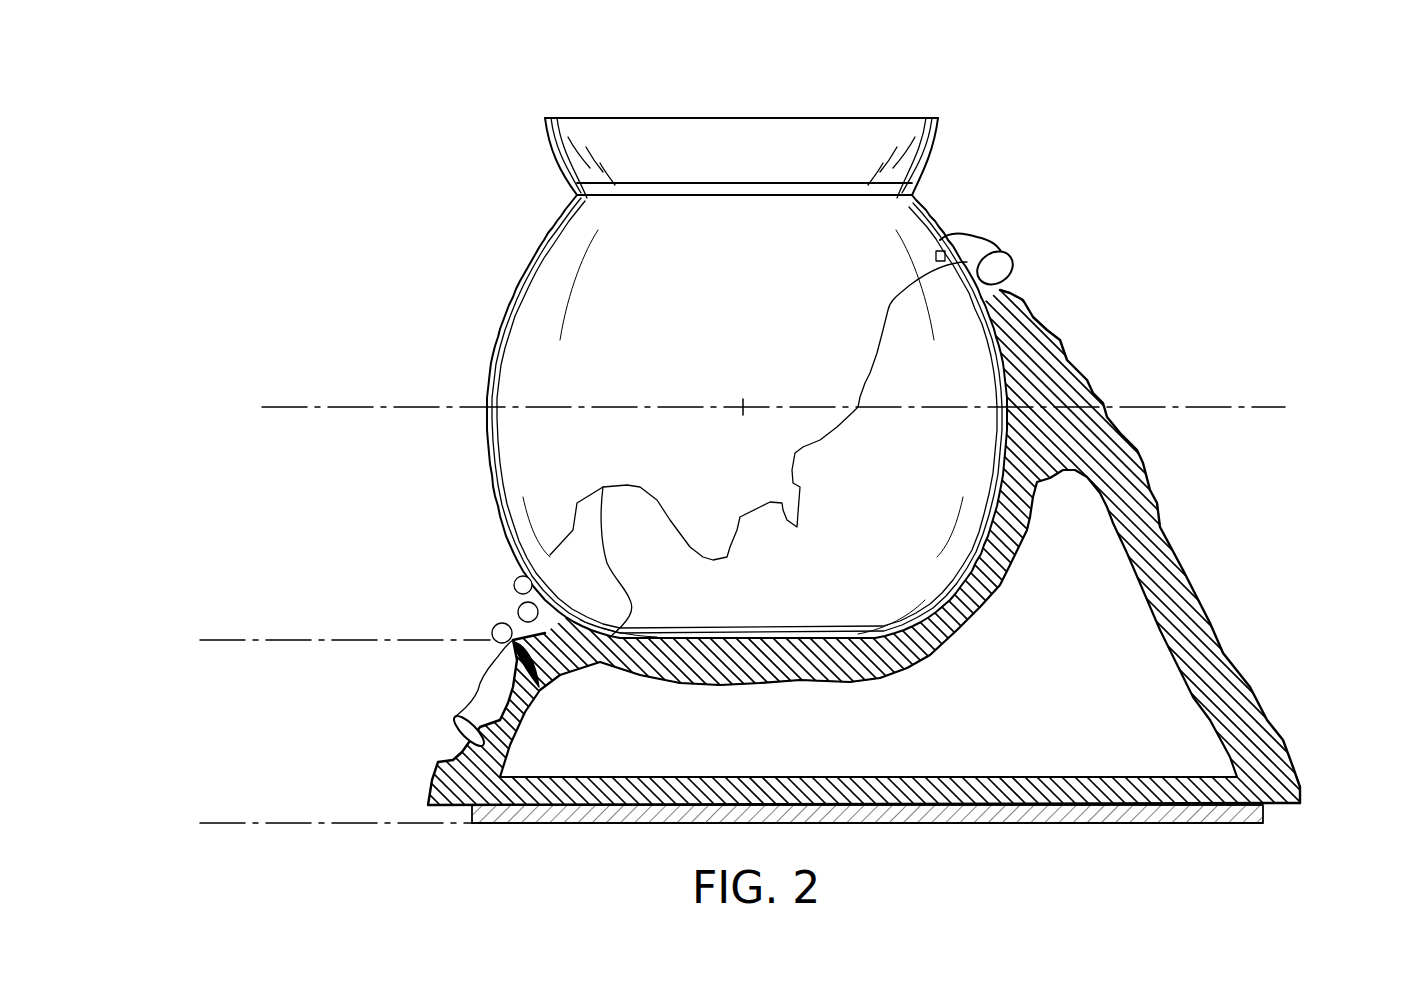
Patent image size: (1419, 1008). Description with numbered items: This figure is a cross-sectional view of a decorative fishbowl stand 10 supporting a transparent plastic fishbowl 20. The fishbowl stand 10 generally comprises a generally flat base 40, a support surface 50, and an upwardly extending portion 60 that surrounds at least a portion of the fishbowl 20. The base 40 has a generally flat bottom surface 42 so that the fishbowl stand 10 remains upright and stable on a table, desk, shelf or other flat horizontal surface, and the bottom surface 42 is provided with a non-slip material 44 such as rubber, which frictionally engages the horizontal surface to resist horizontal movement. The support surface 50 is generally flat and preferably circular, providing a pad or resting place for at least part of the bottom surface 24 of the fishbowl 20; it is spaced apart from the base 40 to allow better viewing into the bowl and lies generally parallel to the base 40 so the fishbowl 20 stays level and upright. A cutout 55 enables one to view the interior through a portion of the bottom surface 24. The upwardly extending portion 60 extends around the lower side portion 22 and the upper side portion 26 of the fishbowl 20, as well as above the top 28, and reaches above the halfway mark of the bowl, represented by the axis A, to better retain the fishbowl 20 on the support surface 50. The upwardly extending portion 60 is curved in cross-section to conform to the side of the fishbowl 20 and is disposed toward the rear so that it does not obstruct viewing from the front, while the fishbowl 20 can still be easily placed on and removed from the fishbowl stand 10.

The fishbowl stand 10 is at (1150, 155).
The fishbowl 20 is at (699, 342).
The lower side portion 22 is at (555, 470).
The bottom surface 24 is at (808, 640).
The upper side portion 26 is at (550, 343).
The top 28 is at (593, 118).
The base 40 is at (906, 529).
The bottom surface 42 is at (1277, 823).
The non-slip material 44 is at (1095, 823).
The support surface 50 is at (757, 640).
The cutout 55 is at (520, 655).
The upwardly extending portion 60 is at (1060, 343).
The axis A is at (330, 407).